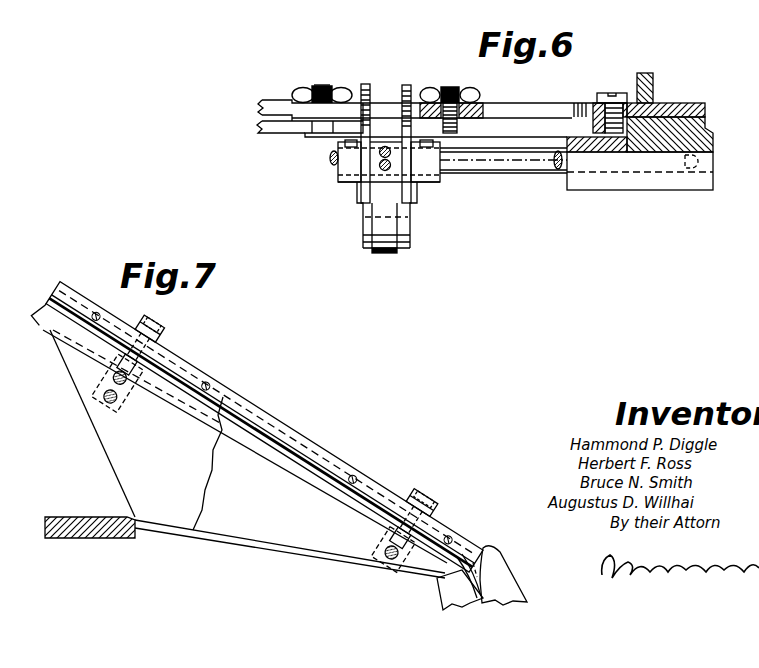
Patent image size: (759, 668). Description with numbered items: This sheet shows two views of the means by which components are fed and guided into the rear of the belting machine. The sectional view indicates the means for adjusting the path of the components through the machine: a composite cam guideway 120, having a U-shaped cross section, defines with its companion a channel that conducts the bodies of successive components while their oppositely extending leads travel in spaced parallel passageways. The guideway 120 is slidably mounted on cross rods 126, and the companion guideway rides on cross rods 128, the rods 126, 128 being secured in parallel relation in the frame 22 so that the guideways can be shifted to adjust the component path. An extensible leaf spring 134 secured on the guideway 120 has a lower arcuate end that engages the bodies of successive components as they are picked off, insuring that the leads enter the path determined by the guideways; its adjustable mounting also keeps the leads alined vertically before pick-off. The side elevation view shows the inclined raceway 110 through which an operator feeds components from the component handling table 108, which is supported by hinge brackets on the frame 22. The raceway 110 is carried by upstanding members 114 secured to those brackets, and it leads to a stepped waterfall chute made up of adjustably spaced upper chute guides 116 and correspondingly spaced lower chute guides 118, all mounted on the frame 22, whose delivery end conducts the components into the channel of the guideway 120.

In FIG. 6, the frame 22 is at (712, 128).
In FIG. 6, the composite cam guideway 120 is at (357, 191).
In FIG. 6, the cross rods 126 is at (463, 173).
In FIG. 6, the cross rods 128 is at (557, 155).
In FIG. 6, the extensible leaf spring 134 is at (383, 254).
In FIG. 7, the component handling table 108 is at (96, 512).
In FIG. 7, the inclined raceway 110 is at (177, 380).
In FIG. 7, the upstanding members 114 is at (117, 475).
In FIG. 7, the upper chute guides 116 is at (507, 550).
In FIG. 7, the lower chute guides 118 is at (440, 582).